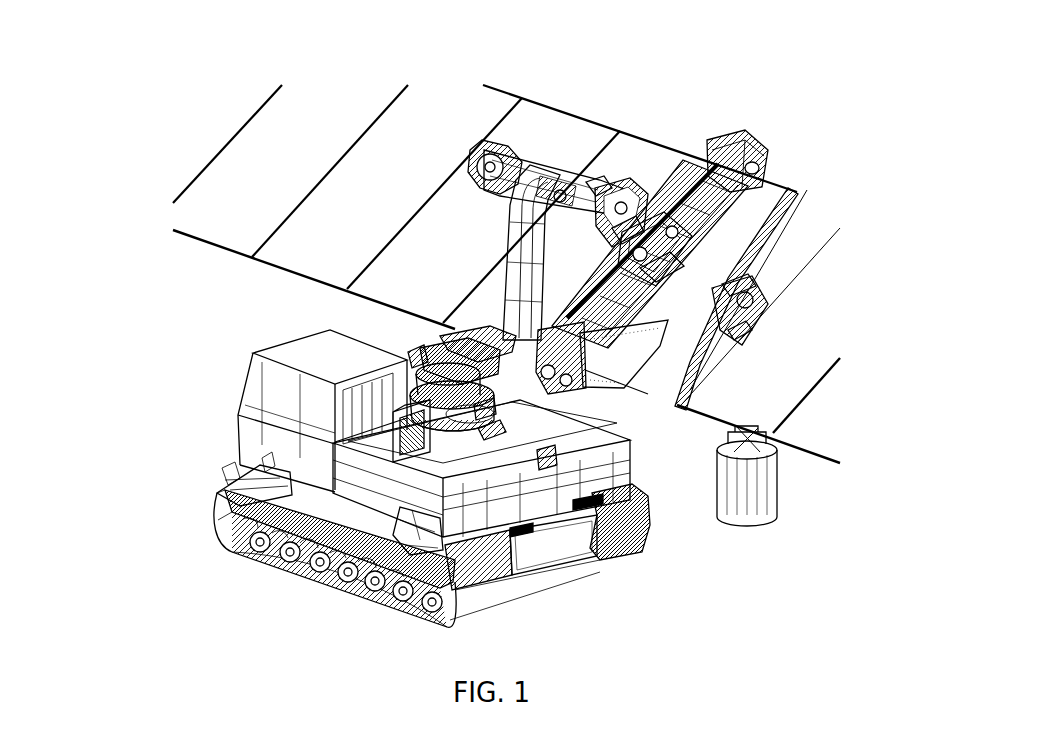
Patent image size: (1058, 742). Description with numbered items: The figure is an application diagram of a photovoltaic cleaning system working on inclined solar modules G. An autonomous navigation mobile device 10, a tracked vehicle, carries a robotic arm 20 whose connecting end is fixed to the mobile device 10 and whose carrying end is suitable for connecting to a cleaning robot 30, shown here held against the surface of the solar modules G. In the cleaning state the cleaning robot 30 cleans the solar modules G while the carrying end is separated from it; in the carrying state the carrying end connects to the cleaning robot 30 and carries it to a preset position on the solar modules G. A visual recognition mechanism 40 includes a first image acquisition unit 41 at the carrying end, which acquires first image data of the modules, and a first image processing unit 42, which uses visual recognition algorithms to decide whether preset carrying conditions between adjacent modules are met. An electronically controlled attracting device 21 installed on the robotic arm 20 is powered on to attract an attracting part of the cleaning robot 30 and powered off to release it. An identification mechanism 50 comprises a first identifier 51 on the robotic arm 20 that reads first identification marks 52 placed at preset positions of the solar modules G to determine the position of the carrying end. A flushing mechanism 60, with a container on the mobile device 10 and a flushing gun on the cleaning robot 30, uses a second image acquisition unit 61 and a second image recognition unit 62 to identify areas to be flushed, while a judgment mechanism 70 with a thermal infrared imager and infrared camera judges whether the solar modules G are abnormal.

The solar modules G is at (317, 252).
The first identification marks 52 is at (337, 265).
The autonomous navigation mobile device 10 is at (220, 500).
The robotic arm 20 is at (557, 183).
The electronically controlled attracting device 21 is at (745, 199).
The cleaning robot 30 is at (762, 148).
The visual recognition mechanism 40 is at (603, 190).
The first image acquisition unit 41 is at (727, 123).
The first image processing unit 42 is at (740, 147).
The identification mechanism 50 is at (697, 232).
The first identifier 51 is at (793, 238).
The flushing mechanism 60 is at (607, 327).
The second image acquisition unit 61 is at (840, 291).
The second image recognition unit 62 is at (843, 307).
The judgment mechanism 70 is at (598, 338).